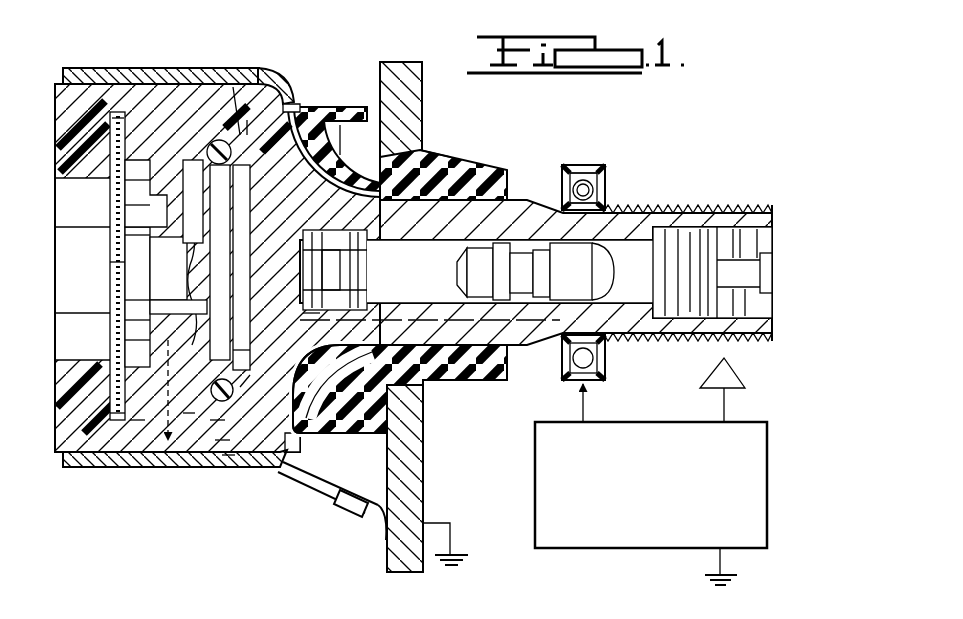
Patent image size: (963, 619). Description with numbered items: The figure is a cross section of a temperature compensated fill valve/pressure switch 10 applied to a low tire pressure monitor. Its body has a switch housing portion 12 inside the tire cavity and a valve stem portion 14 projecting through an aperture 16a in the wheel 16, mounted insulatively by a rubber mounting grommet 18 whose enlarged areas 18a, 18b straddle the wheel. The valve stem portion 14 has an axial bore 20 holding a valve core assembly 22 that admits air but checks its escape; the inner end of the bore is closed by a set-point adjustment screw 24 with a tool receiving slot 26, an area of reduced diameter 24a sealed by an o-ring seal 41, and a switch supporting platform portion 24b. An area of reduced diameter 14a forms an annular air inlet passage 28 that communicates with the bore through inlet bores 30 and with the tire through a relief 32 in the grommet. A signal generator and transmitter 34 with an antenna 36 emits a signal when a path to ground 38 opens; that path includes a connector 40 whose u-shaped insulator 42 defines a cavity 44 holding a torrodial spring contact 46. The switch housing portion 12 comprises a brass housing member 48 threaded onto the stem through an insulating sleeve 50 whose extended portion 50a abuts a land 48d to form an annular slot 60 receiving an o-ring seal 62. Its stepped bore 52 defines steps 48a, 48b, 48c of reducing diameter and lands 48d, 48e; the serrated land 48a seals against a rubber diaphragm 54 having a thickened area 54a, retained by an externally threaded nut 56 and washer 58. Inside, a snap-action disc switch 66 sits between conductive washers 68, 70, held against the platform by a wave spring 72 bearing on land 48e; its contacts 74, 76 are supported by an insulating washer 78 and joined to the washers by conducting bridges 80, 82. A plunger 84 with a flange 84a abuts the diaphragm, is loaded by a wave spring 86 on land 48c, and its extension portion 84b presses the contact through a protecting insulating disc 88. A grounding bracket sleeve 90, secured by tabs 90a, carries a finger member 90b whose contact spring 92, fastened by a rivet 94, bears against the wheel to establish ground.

The temperature compensated fill valve/pressure switch 10 is at (285, 60).
The switch housing portion 12 is at (177, 86).
The valve stem portion 14 is at (653, 230).
The area of reduced diameter 14a is at (348, 185).
The wheel 16 is at (410, 98).
The aperture 16a is at (430, 393).
The rubber mounting grommet 18 is at (487, 170).
The area of increased diameter 18a is at (387, 117).
The area of increased diameter 18b is at (437, 153).
The axial bore 20 is at (432, 279).
The valve core assembly 22 is at (660, 250).
The set-point adjustment screw 24 is at (333, 247).
The area of reduced diameter 24a is at (303, 262).
The switch supporting platform portion 24b is at (303, 317).
The tool receiving slot 26 is at (345, 272).
The annular air inlet passage 28 is at (363, 197).
The radially disposed inlet bores 30 is at (388, 240).
The relief 32 is at (312, 125).
The signal generator and transmitter 34 is at (730, 535).
The antenna 36 is at (730, 370).
The path to ground 38 is at (613, 395).
The connector 40 is at (589, 164).
The o-ring seal 41 is at (325, 318).
The insulator 42 is at (614, 151).
The cavity 44 is at (600, 180).
The torrodial spring contact 46 is at (597, 190).
The housing member 48 is at (219, 226).
The land 48a is at (140, 180).
The step 48b is at (140, 205).
The land 48c is at (140, 235).
The land 48d is at (217, 420).
The land 48e is at (187, 413).
The insulating sleeve 50 is at (237, 90).
The extended portion 50a is at (222, 440).
The stepped bore 52 is at (137, 420).
The rubber diaphragm 54 is at (110, 262).
The circumferential area of increased thickness 54a is at (117, 413).
The externally threaded nut 56 is at (72, 120).
The washer 58 is at (100, 122).
The annular slot 60 is at (227, 457).
The o-ring seal 62 is at (247, 120).
The snap-action disc switch 66 is at (213, 382).
The washer 68 is at (205, 292).
The washer 70 is at (240, 350).
The wave spring 72 is at (178, 170).
The contact 74 is at (233, 220).
The contact 76 is at (200, 250).
The insulating washer 78 is at (232, 180).
The conducting bridge 80 is at (240, 387).
The conducting bridge 82 is at (215, 160).
The plunger 84 is at (135, 270).
The flange 84a is at (133, 317).
The plunger extension portion 84b is at (138, 300).
The wave spring 86 is at (145, 335).
The protecting insulating disc 88 is at (213, 270).
The grounding bracket sleeve 90 is at (70, 462).
The tabs 90a is at (294, 96).
The finger member 90b is at (303, 483).
The contact spring 92 is at (380, 533).
The rivet 94 is at (345, 510).